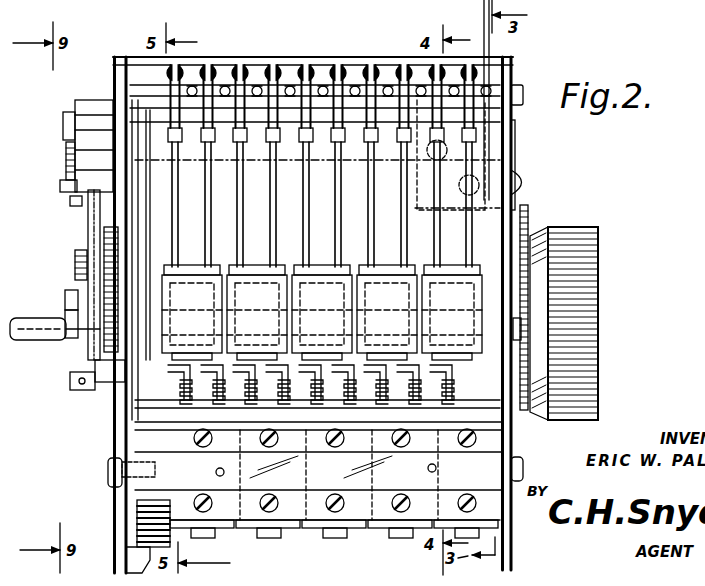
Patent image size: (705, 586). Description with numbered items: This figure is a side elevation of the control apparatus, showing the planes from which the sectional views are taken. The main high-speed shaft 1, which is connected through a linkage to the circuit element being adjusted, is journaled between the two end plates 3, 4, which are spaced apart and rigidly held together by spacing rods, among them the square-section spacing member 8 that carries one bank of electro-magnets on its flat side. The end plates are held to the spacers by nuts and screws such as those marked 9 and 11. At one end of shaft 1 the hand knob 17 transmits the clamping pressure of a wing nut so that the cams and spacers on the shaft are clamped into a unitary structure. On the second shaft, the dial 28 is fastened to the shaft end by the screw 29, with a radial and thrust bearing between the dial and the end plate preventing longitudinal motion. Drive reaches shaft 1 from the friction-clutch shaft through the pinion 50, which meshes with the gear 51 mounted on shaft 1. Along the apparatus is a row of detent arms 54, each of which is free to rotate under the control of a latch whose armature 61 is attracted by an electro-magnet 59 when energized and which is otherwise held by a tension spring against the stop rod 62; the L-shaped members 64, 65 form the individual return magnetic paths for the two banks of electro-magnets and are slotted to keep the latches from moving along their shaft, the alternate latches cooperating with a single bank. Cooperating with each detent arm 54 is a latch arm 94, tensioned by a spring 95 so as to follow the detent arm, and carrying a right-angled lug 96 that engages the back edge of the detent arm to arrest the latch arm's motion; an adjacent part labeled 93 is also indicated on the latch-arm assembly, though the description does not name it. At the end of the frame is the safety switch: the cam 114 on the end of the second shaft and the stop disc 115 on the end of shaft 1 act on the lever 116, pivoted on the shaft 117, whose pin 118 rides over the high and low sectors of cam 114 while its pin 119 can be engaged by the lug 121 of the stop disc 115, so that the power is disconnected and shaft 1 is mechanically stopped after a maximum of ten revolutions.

The shaft 1 is at (30, 330).
The end plate 3 is at (127, 440).
The end plate 4 is at (512, 447).
The spacing member 8 is at (320, 483).
The nut and screw 9 is at (517, 84).
The nut and screw 11 is at (517, 333).
The hand knob 17 is at (598, 256).
The dial 28 is at (515, 167).
The screw 29 is at (528, 180).
The pinion 50 is at (95, 368).
The gear 51 is at (118, 285).
The detent arm 54 is at (302, 172).
The electro-magnet 59 is at (197, 295).
The armature 61 is at (200, 365).
The stop or rod 62 is at (297, 393).
The L-shaped member 64 is at (190, 267).
The L-shaped member 65 is at (250, 523).
The rod head 93 is at (308, 144).
The latch arm 94 is at (307, 164).
The spring 95 is at (288, 83).
The lug 96 is at (308, 164).
The cam 114 is at (65, 167).
The stop disc 115 is at (65, 310).
The lever 116 is at (72, 203).
The shaft 117 is at (65, 120).
The pin 118 is at (60, 187).
The pin 119 is at (63, 328).
The lug 121 is at (62, 313).